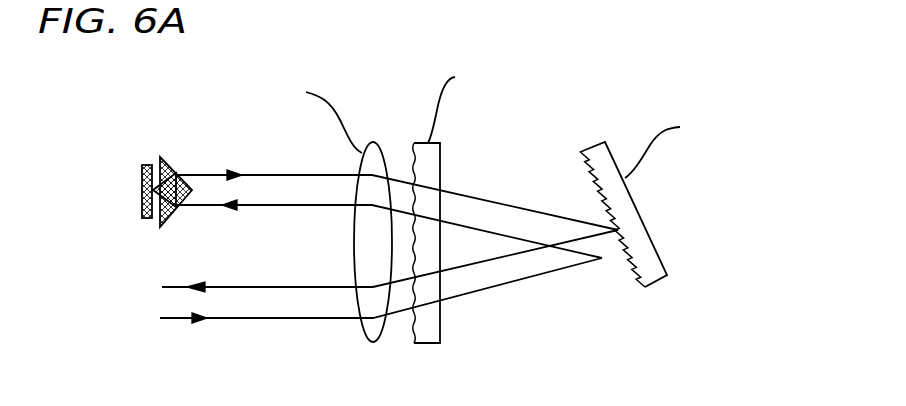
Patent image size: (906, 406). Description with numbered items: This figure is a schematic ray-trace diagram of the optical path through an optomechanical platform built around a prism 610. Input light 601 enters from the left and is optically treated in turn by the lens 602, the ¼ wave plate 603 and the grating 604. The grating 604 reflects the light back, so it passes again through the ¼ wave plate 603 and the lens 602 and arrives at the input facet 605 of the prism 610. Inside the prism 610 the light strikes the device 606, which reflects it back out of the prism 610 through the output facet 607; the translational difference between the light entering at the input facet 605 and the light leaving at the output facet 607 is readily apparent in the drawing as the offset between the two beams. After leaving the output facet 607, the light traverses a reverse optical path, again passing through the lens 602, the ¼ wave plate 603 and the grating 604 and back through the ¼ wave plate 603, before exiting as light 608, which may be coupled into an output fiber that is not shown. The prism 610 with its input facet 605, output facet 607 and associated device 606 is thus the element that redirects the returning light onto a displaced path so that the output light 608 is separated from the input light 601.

The input light 601 is at (236, 318).
The lens 602 is at (363, 337).
The ¼ wave plate 603 is at (441, 343).
The grating 604 is at (655, 247).
The input facet 605 is at (174, 212).
The device 606 is at (141, 191).
The output facet 607 is at (174, 170).
The light 608 is at (162, 287).
The prism 610 is at (207, 120).